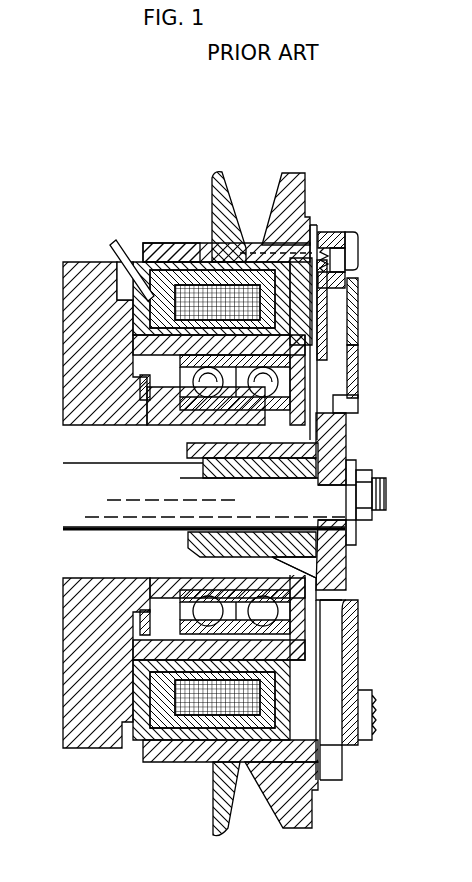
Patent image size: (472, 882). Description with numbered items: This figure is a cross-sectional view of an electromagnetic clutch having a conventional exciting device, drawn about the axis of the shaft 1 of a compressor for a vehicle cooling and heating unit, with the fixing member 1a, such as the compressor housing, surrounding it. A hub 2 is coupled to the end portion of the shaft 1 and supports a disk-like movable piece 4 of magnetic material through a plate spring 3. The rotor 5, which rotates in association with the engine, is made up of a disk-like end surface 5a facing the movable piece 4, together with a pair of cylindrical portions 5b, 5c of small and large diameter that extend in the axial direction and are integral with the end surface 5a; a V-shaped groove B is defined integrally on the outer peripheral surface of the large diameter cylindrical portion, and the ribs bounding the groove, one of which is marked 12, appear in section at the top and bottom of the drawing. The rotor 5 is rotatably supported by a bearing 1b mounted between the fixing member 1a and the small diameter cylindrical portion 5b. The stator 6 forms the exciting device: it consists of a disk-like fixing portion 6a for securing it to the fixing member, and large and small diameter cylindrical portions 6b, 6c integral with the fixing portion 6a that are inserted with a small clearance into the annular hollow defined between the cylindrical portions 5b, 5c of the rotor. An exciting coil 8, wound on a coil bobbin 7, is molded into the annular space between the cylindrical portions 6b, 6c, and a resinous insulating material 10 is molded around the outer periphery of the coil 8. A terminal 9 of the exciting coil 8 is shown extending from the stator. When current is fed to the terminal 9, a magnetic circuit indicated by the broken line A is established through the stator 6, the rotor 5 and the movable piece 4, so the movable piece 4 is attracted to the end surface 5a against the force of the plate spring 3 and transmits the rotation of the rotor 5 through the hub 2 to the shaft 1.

The shaft 1 is at (100, 478).
The fixing member 1a is at (152, 420).
The bearing 1b is at (340, 404).
The hub 2 is at (356, 428).
The plate spring 3 is at (350, 234).
The movable piece 4 is at (330, 232).
The rotor 5 is at (288, 185).
The end surface 5a is at (340, 375).
The small diameter cylindrical portion 5b is at (135, 348).
The large diameter cylindrical portion 5c is at (157, 258).
The stator 6 is at (225, 265).
The fixing portion 6a is at (133, 318).
The large diameter cylindrical portion 6b is at (320, 338).
The small diameter cylindrical portion 6c is at (215, 285).
The coil bobbin 7 is at (330, 320).
The exciting coil 8 is at (262, 287).
The terminal 9 is at (126, 250).
The resinous insulating material 10 is at (336, 305).
The pulley rib 12 is at (228, 200).
The magnetic circuit A is at (306, 225).
The V-shaped groove B is at (251, 240).